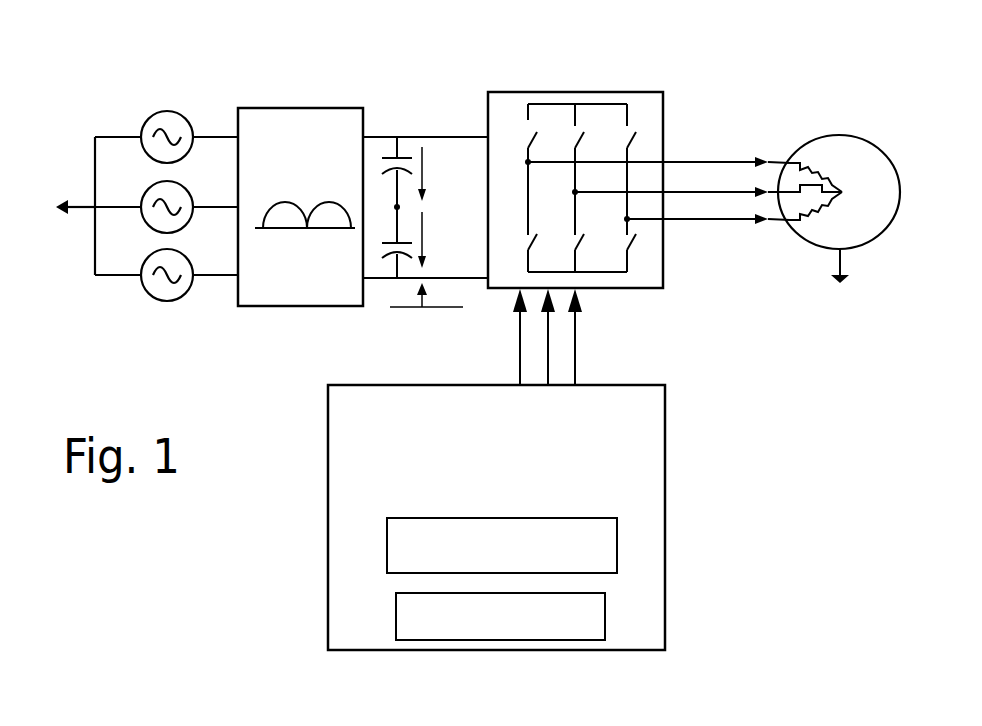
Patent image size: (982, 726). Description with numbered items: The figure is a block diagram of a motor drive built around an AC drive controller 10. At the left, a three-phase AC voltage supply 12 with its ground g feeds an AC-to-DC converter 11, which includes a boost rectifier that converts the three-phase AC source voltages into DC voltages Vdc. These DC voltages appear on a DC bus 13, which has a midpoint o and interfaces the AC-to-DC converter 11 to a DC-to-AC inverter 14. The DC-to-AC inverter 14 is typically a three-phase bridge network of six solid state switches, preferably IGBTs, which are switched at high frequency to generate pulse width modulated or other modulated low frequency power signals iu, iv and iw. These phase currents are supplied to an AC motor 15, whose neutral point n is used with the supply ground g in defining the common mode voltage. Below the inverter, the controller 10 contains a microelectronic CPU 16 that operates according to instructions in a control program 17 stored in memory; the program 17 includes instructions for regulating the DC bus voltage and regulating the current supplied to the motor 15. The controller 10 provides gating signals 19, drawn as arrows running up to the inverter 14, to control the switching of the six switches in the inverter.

The AC drive controller 10 is at (716, 455).
The AC-to-DC converter 11 is at (280, 107).
The AC voltage supply 12 is at (181, 110).
The DC bus 13 is at (467, 101).
The DC-to-AC inverter 14 is at (615, 92).
The AC motor 15 is at (837, 135).
The CPU 16 is at (605, 613).
The control program 17 is at (617, 557).
The gating signals 19 is at (520, 347).